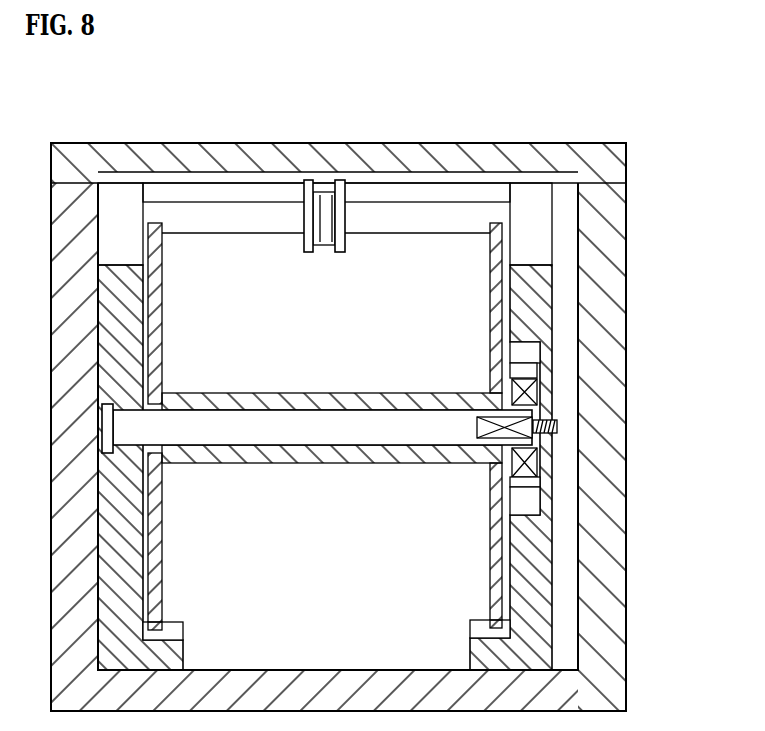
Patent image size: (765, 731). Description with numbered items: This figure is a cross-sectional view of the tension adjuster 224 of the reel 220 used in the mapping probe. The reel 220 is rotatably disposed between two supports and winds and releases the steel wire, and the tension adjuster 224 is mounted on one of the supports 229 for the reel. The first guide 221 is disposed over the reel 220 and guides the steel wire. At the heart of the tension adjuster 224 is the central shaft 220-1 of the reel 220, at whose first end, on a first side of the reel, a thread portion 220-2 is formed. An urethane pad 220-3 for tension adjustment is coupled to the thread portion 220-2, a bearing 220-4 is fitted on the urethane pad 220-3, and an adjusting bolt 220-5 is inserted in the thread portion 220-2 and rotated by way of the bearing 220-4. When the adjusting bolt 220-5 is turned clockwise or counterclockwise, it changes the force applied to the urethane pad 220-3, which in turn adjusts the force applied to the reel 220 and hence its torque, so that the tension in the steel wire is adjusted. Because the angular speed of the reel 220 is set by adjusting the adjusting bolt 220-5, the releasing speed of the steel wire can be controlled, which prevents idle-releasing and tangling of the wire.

The reel 220 is at (308, 476).
The central shaft 220-1 is at (226, 428).
The thread portion 220-2 is at (474, 428).
The urethane pad for tension adjustment 220-3 is at (507, 538).
The bearing 220-4 is at (538, 367).
The adjusting bolt 220-5 is at (561, 427).
The first guide 221 is at (306, 256).
The tension adjuster 224 is at (527, 517).
The support 229 is at (558, 632).